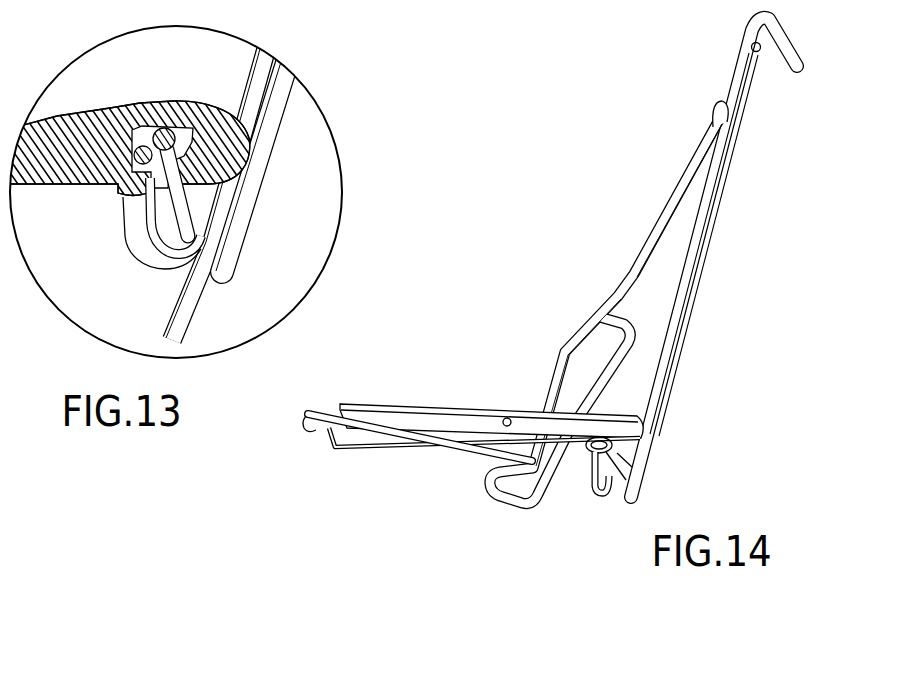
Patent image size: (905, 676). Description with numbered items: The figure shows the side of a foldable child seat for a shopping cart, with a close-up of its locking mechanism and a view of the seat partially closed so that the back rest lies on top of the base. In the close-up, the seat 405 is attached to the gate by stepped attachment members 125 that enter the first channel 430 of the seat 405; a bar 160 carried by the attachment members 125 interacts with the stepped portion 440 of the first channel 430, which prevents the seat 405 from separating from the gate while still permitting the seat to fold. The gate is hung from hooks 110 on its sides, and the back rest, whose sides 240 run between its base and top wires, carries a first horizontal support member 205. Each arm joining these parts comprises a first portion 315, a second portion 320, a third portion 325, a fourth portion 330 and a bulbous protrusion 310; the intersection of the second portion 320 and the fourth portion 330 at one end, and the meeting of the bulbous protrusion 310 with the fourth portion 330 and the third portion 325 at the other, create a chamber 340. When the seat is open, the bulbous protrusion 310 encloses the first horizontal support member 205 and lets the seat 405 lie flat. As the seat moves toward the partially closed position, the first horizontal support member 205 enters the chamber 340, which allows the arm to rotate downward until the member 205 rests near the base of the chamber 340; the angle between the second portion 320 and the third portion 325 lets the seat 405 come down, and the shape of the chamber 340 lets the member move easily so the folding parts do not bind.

In FIG. 14, the hooks 110 is at (760, 14).
In FIG. 13, the attachment members 125 is at (163, 128).
In FIG. 13, the bar 160 is at (144, 146).
In FIG. 14, the first horizontal support member 205 is at (543, 490).
In FIG. 14, the sides 240 is at (457, 451).
In FIG. 14, the bulbous protrusion 310 is at (484, 490).
In FIG. 14, the first portion 315 is at (684, 172).
In FIG. 14, the second portion 320 is at (580, 332).
In FIG. 14, the third portion 325 is at (553, 372).
In FIG. 14, the fourth portion 330 is at (601, 385).
In FIG. 14, the chamber 340 is at (604, 352).
In FIG. 14, the seat 405 is at (497, 440).
In FIG. 13, the first channel 430 is at (122, 193).
In FIG. 13, the stepped portion 440 is at (183, 136).